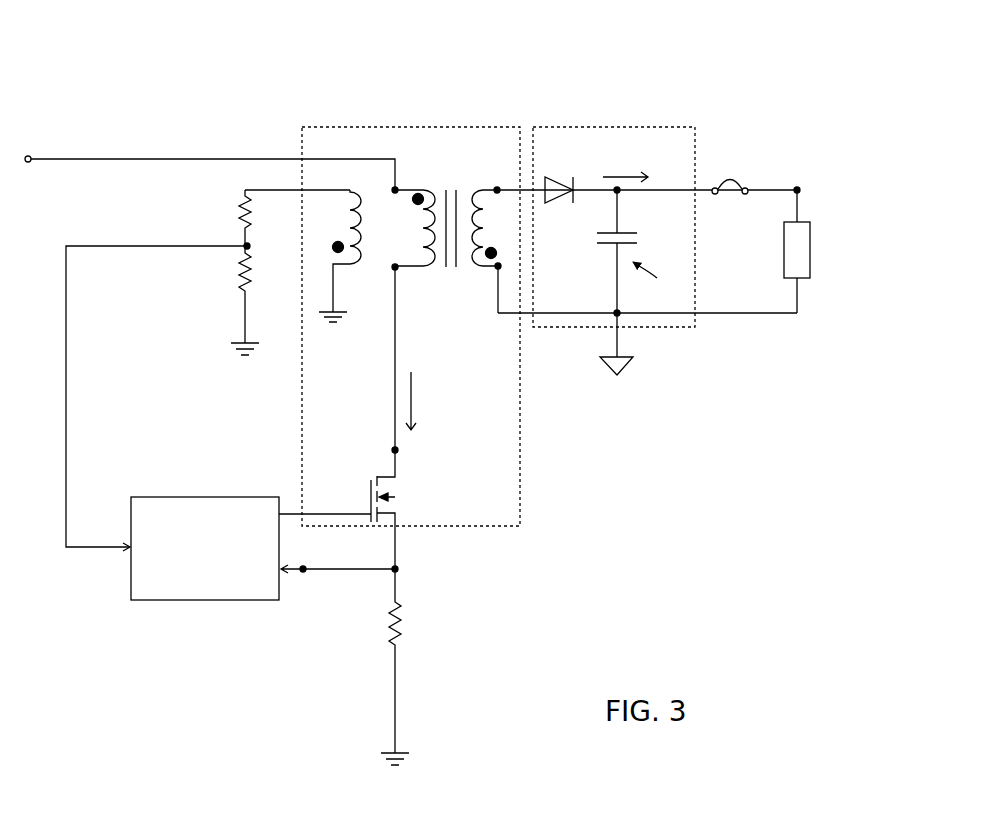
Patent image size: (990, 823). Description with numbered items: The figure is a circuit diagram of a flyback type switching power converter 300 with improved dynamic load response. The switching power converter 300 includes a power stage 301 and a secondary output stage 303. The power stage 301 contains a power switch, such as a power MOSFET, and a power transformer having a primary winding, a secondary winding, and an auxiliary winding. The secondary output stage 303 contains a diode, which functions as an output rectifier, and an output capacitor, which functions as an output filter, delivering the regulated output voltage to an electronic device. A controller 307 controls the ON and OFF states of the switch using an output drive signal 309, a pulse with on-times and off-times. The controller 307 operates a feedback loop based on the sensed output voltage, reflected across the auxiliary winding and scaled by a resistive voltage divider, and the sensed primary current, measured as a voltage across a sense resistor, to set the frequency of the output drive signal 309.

The switching power converter 300 is at (610, 496).
The power stage 301 is at (451, 124).
The secondary output stage 303 is at (620, 124).
The controller 307 is at (204, 484).
The output drive signal 309 is at (356, 508).